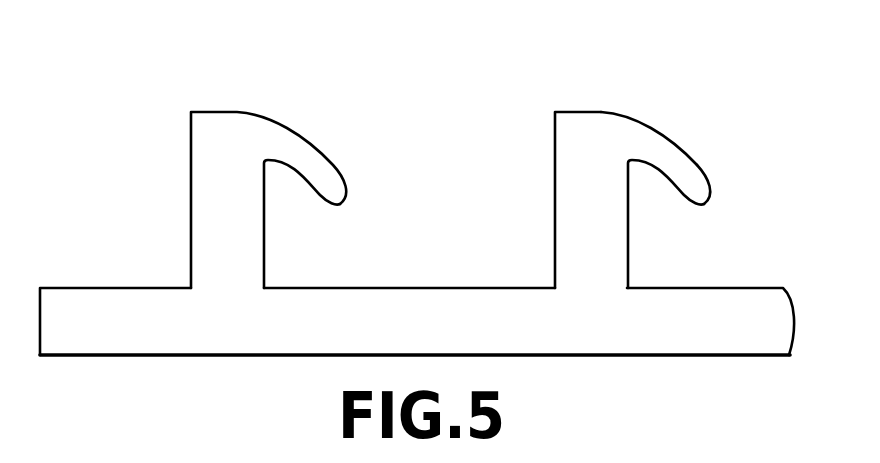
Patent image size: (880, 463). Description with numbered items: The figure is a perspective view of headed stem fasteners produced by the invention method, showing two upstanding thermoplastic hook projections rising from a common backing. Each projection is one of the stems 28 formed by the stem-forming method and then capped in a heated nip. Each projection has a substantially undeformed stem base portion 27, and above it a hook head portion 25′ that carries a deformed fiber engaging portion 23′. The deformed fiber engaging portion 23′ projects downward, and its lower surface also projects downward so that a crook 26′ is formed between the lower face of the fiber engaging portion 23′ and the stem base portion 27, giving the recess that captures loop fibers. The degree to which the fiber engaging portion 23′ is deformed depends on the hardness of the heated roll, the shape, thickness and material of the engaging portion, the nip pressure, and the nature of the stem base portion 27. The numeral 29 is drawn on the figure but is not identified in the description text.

The hook 23′ is at (668, 150).
The hook head 25′ is at (232, 128).
The recess 26′ is at (273, 162).
The upright wall 27 is at (577, 222).
The base surface 28 is at (548, 255).
The hook tip 29 is at (703, 202).